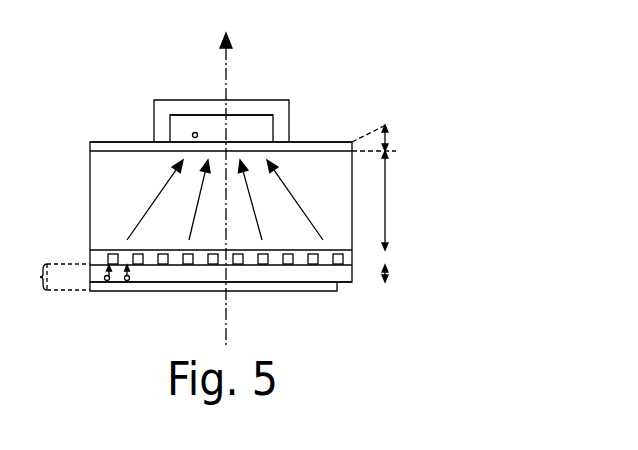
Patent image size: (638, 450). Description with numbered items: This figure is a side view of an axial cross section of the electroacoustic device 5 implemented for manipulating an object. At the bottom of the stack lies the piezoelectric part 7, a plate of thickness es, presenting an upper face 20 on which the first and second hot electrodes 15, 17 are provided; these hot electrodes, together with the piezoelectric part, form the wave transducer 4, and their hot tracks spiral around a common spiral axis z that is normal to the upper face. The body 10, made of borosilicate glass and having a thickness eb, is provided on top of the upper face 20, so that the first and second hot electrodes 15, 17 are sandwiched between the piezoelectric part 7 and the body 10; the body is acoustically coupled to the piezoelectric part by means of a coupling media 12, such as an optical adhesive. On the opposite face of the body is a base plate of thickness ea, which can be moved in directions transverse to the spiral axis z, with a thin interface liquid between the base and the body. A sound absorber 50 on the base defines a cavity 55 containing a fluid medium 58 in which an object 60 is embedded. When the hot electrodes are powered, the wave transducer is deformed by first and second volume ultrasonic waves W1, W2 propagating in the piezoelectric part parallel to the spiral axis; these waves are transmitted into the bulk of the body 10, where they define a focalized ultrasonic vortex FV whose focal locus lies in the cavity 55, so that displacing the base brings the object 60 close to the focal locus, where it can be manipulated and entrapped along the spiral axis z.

The light-emitting module 4 is at (55, 277).
The lighting device 5 is at (427, 175).
The piezoelectric part 7 is at (345, 273).
The body 10 is at (100, 162).
The coupling media 12 is at (90, 253).
The first hot electrode 15 is at (338, 270).
The second hot electrode 17 is at (310, 265).
The upper face 20 is at (353, 257).
The sound absorber 50 is at (280, 100).
The cavity 55 is at (242, 122).
The fluid medium 58 is at (263, 127).
The object 60 is at (194, 133).
The focalized ultrasonic vortex FV is at (152, 193).
The spiral axis z is at (226, 55).
The thickness of the base ea is at (385, 141).
The thickness of the body eb is at (385, 202).
The thickness of the piezoelectric part es is at (385, 273).
The first volume ultrasonic wave W1 is at (107, 281).
The second volume ultrasonic wave W2 is at (127, 281).